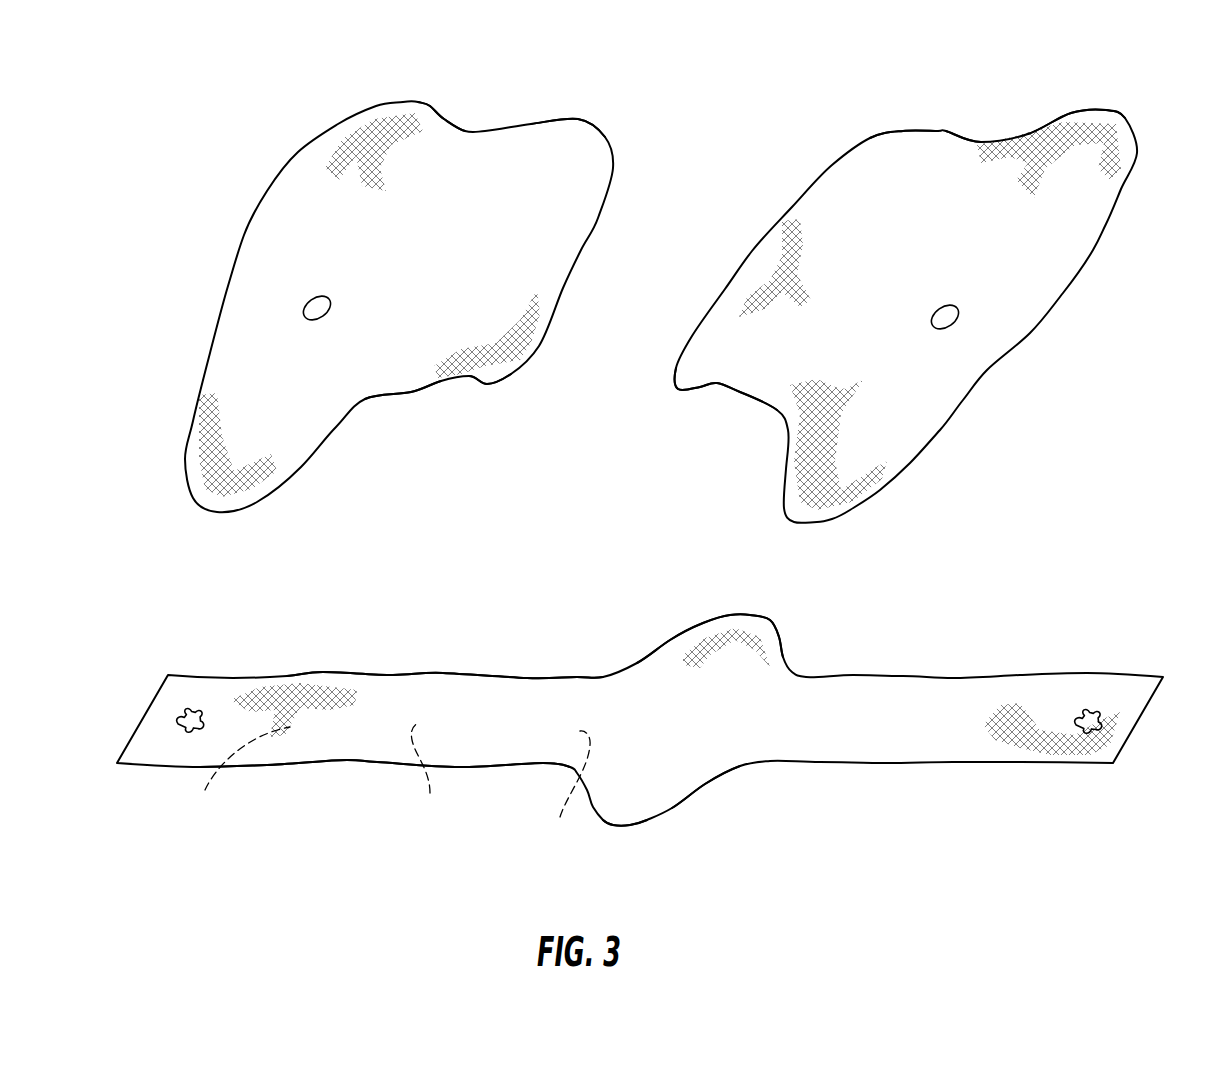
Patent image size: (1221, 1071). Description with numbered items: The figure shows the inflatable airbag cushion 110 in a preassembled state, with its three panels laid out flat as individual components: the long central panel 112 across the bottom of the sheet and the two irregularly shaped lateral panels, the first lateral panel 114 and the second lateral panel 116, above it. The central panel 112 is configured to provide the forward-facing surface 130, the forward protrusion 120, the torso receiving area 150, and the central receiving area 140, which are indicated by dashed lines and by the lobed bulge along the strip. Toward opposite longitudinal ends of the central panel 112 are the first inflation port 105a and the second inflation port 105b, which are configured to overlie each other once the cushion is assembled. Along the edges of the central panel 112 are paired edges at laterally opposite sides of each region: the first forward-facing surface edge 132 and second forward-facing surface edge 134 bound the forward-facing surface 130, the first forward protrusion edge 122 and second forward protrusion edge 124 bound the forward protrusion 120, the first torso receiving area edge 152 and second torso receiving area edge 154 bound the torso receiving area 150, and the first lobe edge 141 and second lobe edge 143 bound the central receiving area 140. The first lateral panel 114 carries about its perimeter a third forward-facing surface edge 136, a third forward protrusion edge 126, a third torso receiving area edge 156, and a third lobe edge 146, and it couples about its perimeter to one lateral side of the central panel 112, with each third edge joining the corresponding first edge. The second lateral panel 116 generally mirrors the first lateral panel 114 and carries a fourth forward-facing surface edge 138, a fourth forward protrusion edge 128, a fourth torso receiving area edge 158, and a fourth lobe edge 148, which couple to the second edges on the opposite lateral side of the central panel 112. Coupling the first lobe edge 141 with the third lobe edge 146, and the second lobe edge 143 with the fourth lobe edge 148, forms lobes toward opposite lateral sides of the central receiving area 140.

The inflatable airbag cushion 110 is at (163, 127).
The central panel 112 is at (839, 728).
The first lateral panel 114 is at (401, 261).
The second lateral panel 116 is at (897, 242).
The forward protrusion 120 is at (427, 772).
The first forward protrusion edge 122 is at (440, 673).
The second forward protrusion edge 124 is at (370, 763).
The third forward protrusion edge 126 is at (487, 384).
The fourth forward protrusion edge 128 is at (680, 391).
The forward-facing surface 130 is at (234, 774).
The first forward-facing surface edge 132 is at (320, 672).
The second forward-facing surface edge 134 is at (277, 765).
The third forward-facing surface edge 136 is at (409, 392).
The fourth forward-facing surface edge 138 is at (759, 405).
The central receiving area 140 is at (676, 731).
The first lobe edge 141 is at (747, 615).
The second lobe edge 143 is at (610, 827).
The third lobe edge 146 is at (426, 102).
The fourth lobe edge 148 is at (1113, 113).
The torso receiving area 150 is at (564, 789).
The first torso receiving area edge 152 is at (575, 677).
The second torso receiving area edge 154 is at (533, 765).
The third torso receiving area edge 156 is at (578, 119).
The fourth torso receiving area edge 158 is at (938, 131).
The first inflation port 105a is at (177, 718).
The second inflation port 105b is at (1105, 715).